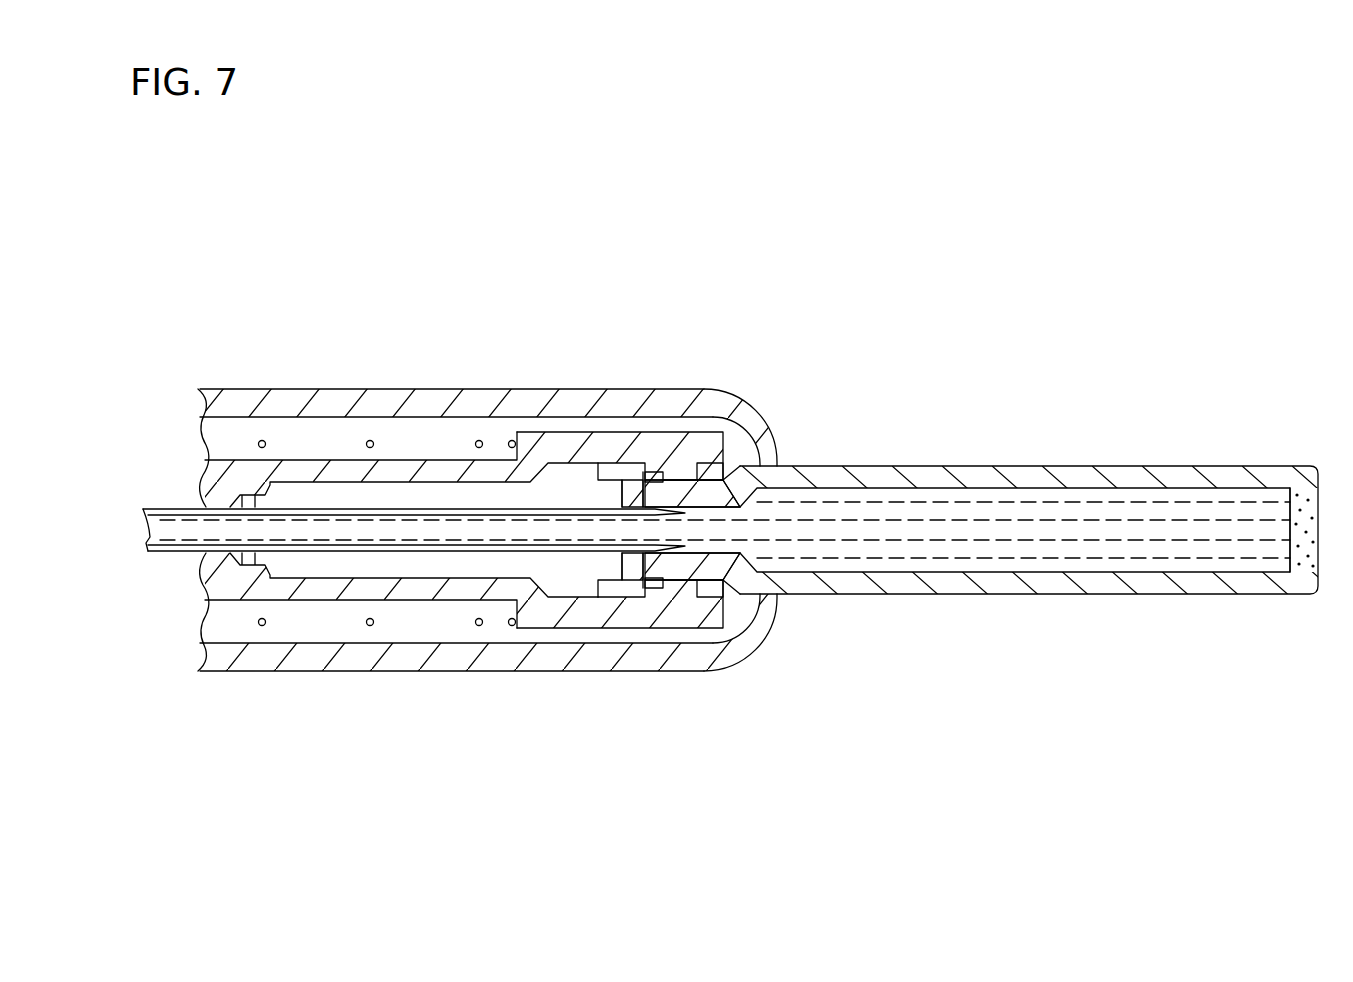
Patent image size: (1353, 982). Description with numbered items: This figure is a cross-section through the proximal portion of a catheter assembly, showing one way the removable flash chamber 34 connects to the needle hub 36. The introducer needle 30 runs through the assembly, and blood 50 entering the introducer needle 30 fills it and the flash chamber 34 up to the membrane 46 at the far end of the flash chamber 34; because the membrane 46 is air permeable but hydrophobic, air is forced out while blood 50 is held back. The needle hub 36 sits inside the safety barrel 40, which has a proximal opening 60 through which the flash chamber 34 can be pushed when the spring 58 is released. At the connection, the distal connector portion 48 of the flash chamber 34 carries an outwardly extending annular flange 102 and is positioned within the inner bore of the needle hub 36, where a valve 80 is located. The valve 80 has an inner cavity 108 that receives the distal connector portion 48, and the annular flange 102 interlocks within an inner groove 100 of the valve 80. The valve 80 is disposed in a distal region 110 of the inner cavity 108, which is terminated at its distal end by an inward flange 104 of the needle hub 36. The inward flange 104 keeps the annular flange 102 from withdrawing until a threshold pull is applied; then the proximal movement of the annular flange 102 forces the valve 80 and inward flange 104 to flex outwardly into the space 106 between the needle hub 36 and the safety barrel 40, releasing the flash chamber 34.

The introducer needle 30 is at (162, 553).
The flash chamber 34 is at (985, 464).
The needle hub 36 is at (400, 470).
The safety barrel 40 is at (318, 655).
The membrane 46 is at (1313, 513).
The distal connector portion 48 is at (758, 458).
The blood 50 is at (1097, 504).
The spring 58 is at (258, 441).
The proximal opening 60 is at (793, 500).
The valve 80 is at (620, 588).
The inner groove 100 is at (603, 478).
The annular flange 102 is at (656, 478).
The inward flange 104 is at (725, 600).
The space 106 is at (704, 640).
The inner cavity 108 is at (697, 482).
The distal region 110 is at (548, 483).